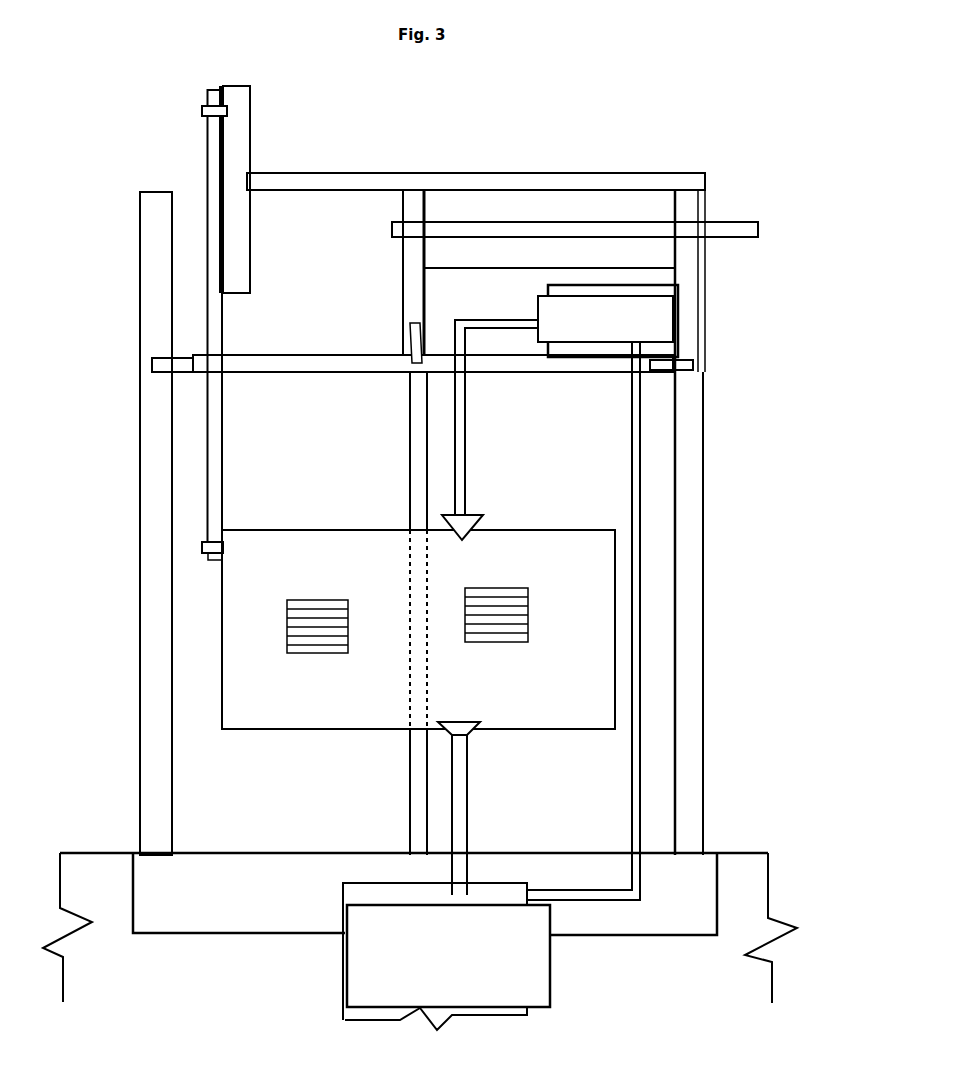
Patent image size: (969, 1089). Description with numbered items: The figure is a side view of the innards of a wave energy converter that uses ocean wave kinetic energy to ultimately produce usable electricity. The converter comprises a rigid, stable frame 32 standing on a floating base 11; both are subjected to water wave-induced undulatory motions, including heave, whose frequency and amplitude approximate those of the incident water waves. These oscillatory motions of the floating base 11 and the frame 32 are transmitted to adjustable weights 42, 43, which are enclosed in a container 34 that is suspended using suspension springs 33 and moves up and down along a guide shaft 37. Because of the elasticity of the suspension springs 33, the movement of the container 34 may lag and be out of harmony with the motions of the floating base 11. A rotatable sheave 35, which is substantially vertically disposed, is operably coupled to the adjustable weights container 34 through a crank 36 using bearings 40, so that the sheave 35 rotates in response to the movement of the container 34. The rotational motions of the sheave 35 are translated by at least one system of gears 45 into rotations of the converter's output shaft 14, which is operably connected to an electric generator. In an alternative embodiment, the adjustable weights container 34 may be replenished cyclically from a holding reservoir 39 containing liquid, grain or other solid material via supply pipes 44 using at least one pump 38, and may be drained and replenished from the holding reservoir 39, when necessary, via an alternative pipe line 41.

The floating base 11 is at (112, 853).
The output shaft 14 is at (733, 228).
The frame 32 is at (153, 262).
The suspension springs 33 is at (413, 415).
The adjustable weights container 34 is at (243, 610).
The sheave 35 is at (238, 97).
The crank 36 is at (208, 140).
The guide shaft 37 is at (418, 772).
The pump 38 is at (633, 328).
The holding reservoir 39 is at (515, 970).
The bearings 40 is at (207, 107).
The alternative pipe line 41 is at (460, 777).
The adjustable weight 42 is at (325, 638).
The adjustable weight 43 is at (497, 632).
The supply pipes 44 is at (466, 432).
The system of gears 45 is at (545, 212).